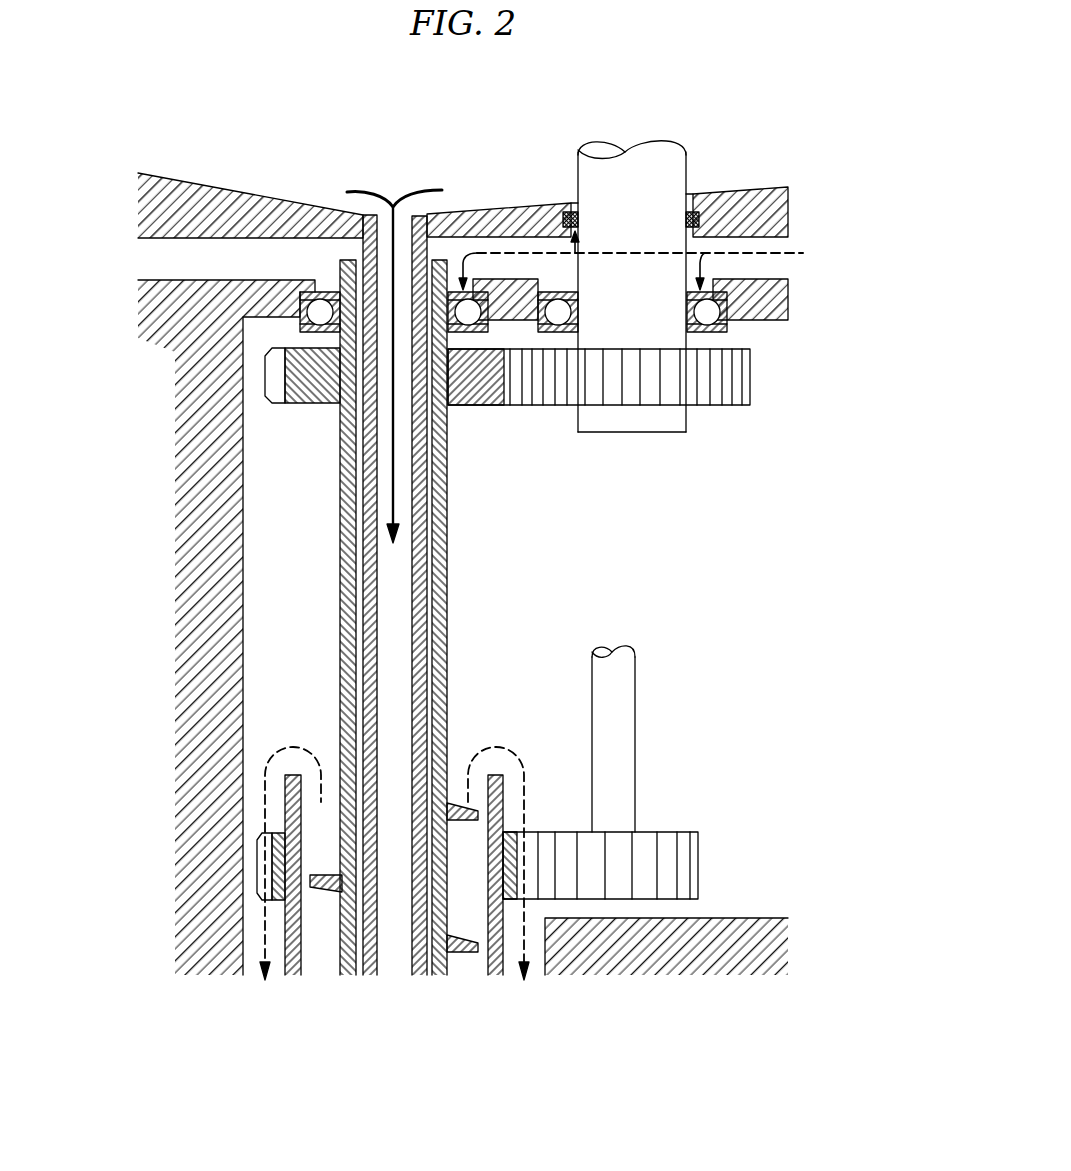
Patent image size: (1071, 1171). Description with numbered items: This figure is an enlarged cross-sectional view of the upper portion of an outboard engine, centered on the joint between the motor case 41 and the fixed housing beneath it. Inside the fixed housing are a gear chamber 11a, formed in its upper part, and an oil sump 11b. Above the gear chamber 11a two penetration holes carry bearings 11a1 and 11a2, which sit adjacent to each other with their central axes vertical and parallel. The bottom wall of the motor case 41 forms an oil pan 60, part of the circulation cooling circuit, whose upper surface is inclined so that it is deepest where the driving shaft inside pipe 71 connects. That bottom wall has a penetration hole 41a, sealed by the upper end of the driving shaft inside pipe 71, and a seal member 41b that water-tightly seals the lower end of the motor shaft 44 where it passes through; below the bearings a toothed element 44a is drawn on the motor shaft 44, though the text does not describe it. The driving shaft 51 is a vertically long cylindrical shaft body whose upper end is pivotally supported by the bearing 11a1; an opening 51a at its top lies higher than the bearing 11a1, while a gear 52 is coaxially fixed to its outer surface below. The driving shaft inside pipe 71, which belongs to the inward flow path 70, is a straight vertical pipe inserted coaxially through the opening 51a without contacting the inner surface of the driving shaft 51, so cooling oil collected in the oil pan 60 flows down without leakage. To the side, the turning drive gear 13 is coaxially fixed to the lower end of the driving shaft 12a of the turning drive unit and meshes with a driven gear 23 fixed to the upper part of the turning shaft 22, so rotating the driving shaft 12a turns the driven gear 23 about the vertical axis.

The oil pan 60 is at (193, 178).
The bearing 11a1 is at (300, 300).
The opening 51a is at (357, 277).
The penetration hole 41a is at (412, 215).
The bearing 11a2 is at (568, 288).
The motor shaft 44 is at (686, 174).
The seal member 41b is at (700, 222).
The motor case 41 is at (750, 238).
The drive gear 44a is at (752, 380).
The gear 52 is at (275, 397).
The driving shaft 51 is at (447, 550).
The driving shaft inside pipe 71 is at (427, 583).
The inward flow path 70 is at (466, 595).
The gear chamber 11a is at (243, 655).
The driving shaft of the turning drive unit 12a is at (630, 745).
The turning drive gear 13 is at (697, 866).
The driven gear 23 is at (260, 868).
The turning shaft 22 is at (285, 928).
The oil sump 11b is at (545, 922).